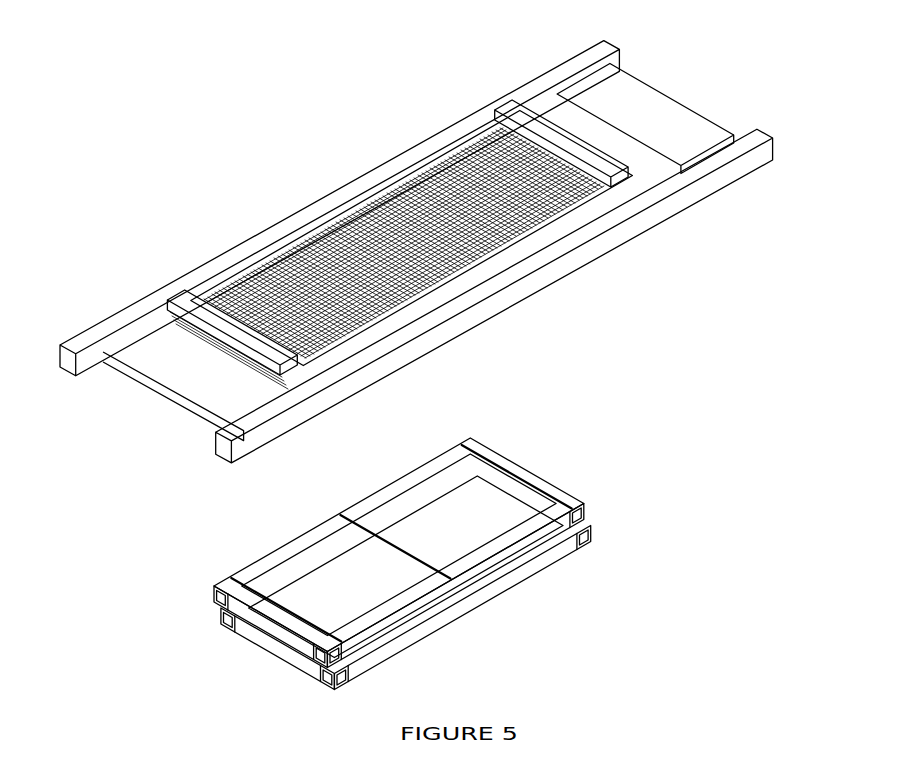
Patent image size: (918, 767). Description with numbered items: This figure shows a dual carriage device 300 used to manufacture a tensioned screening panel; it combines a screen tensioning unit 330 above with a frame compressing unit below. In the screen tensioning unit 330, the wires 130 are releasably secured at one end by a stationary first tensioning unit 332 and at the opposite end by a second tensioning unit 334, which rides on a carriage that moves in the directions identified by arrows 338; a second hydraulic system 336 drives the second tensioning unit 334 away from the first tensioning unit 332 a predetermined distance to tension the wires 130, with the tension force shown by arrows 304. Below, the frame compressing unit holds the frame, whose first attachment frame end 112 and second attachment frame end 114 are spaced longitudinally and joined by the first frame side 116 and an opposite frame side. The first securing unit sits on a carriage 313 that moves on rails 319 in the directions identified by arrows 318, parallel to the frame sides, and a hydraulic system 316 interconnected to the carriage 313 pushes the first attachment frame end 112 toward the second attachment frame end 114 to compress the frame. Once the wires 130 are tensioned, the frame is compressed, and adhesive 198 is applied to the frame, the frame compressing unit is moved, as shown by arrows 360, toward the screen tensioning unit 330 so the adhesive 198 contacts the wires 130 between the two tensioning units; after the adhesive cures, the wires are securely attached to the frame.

The wires 130 is at (388, 195).
The screen tensioning unit 330 is at (652, 62).
The first tensioning unit 332 is at (628, 173).
The second tensioning unit 334 is at (182, 292).
The second hydraulic system 336 is at (140, 337).
The arrows 338 is at (548, 93).
The longitudinal direction 304 is at (103, 424).
The arrows 318 is at (453, 107).
The arrows 360 is at (578, 493).
The dual carriage device 300 is at (752, 22).
The first attachment frame end 112 is at (467, 437).
The first frame side 116 is at (430, 461).
The second attachment frame end 114 is at (251, 578).
The carriage 313 is at (542, 468).
The hydraulic system 316 is at (592, 517).
The rails 319 is at (545, 582).
The adhesive 198 is at (545, 490).